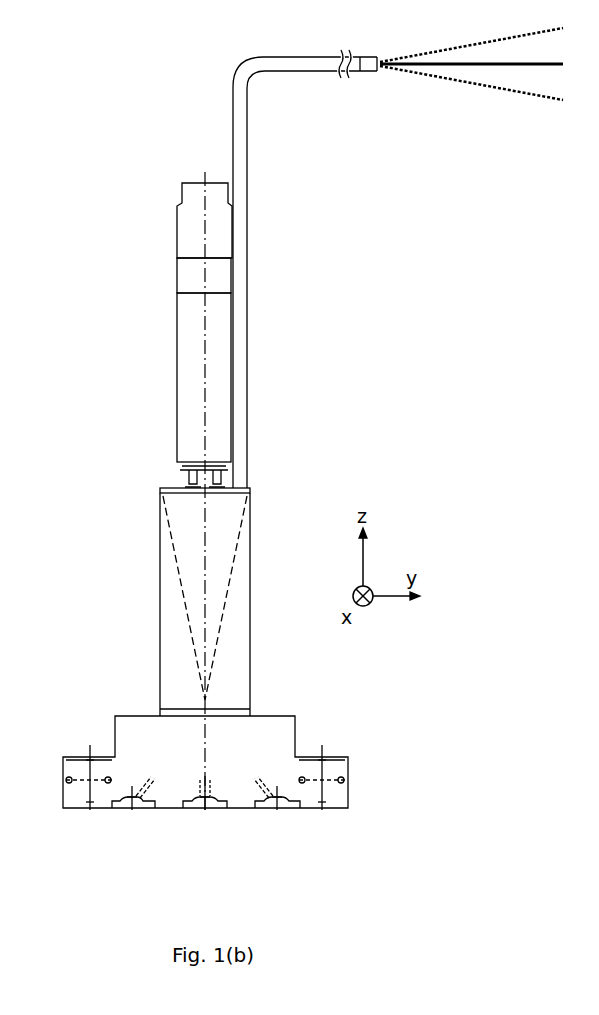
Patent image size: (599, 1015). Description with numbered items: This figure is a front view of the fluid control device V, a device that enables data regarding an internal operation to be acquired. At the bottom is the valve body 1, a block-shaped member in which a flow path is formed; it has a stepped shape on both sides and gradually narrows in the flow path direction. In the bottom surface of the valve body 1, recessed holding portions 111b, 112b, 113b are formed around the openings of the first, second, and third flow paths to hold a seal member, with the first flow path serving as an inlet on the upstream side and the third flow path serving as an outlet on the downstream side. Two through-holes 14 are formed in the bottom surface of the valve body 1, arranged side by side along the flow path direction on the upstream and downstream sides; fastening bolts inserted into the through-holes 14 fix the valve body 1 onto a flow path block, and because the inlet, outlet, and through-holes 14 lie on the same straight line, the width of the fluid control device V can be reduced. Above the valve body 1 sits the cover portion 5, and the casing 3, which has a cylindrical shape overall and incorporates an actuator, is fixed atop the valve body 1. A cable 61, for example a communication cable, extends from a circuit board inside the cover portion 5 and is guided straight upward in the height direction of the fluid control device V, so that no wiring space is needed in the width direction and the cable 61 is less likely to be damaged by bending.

The fluid control device V is at (168, 193).
The casing 3 is at (176, 358).
The cable 61 is at (249, 283).
The cover portion 5 is at (160, 598).
The valve body 1 is at (124, 716).
The through-holes 14 is at (78, 756).
The recessed holding portion 111b is at (135, 810).
The recessed holding portion 112b is at (206, 810).
The recessed holding portion 113b is at (279, 810).